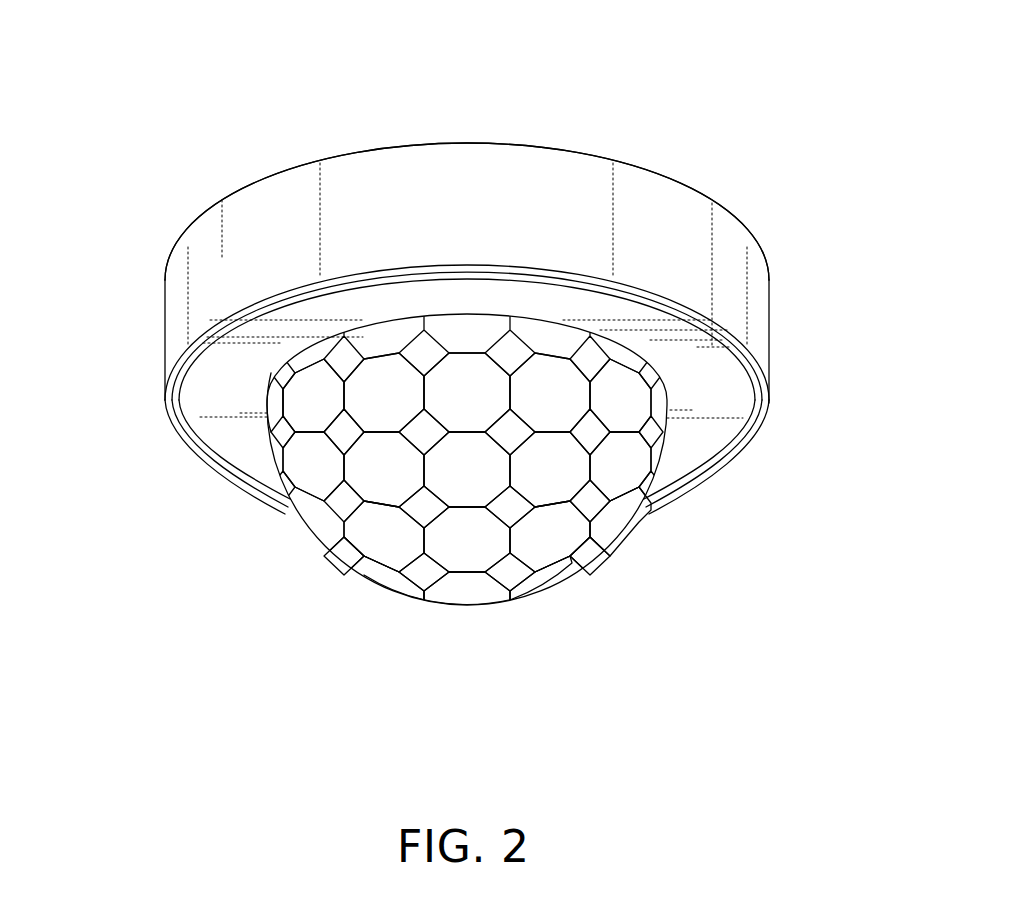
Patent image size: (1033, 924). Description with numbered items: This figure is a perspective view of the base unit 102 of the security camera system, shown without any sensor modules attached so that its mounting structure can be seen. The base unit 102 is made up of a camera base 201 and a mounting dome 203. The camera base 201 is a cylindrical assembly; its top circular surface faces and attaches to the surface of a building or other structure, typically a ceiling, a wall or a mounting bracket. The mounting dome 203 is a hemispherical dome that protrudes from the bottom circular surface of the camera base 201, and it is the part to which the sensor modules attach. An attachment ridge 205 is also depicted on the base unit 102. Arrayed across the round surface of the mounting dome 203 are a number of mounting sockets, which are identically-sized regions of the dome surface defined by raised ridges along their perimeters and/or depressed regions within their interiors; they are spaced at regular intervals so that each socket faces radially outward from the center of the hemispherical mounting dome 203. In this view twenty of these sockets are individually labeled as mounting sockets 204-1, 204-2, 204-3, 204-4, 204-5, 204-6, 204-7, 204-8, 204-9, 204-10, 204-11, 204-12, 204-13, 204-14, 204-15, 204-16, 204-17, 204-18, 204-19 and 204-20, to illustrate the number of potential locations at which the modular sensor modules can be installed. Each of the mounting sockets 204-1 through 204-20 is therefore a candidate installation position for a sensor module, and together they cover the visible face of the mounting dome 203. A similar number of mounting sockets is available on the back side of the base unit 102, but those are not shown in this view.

The base unit 102 is at (470, 126).
The camera base 201 is at (772, 318).
The mounting dome 203 is at (613, 490).
The attachment ridge 205 is at (174, 415).
The mounting socket 204-1 is at (373, 473).
The mounting socket 204-2 is at (400, 592).
The mounting socket 204-3 is at (472, 547).
The mounting socket 204-4 is at (530, 587).
The mounting socket 204-5 is at (603, 528).
The mounting socket 204-6 is at (555, 532).
The mounting socket 204-7 is at (463, 480).
The mounting socket 204-8 is at (315, 468).
The mounting socket 204-9 is at (567, 473).
The mounting socket 204-10 is at (557, 383).
The mounting socket 204-11 is at (620, 393).
The mounting socket 204-12 is at (472, 382).
The mounting socket 204-13 is at (385, 390).
The mounting socket 204-14 is at (320, 393).
The mounting socket 204-15 is at (278, 396).
The mounting socket 204-16 is at (340, 566).
The mounting socket 204-17 is at (397, 553).
The mounting socket 204-18 is at (463, 590).
The mounting socket 204-19 is at (582, 557).
The mounting socket 204-20 is at (623, 453).